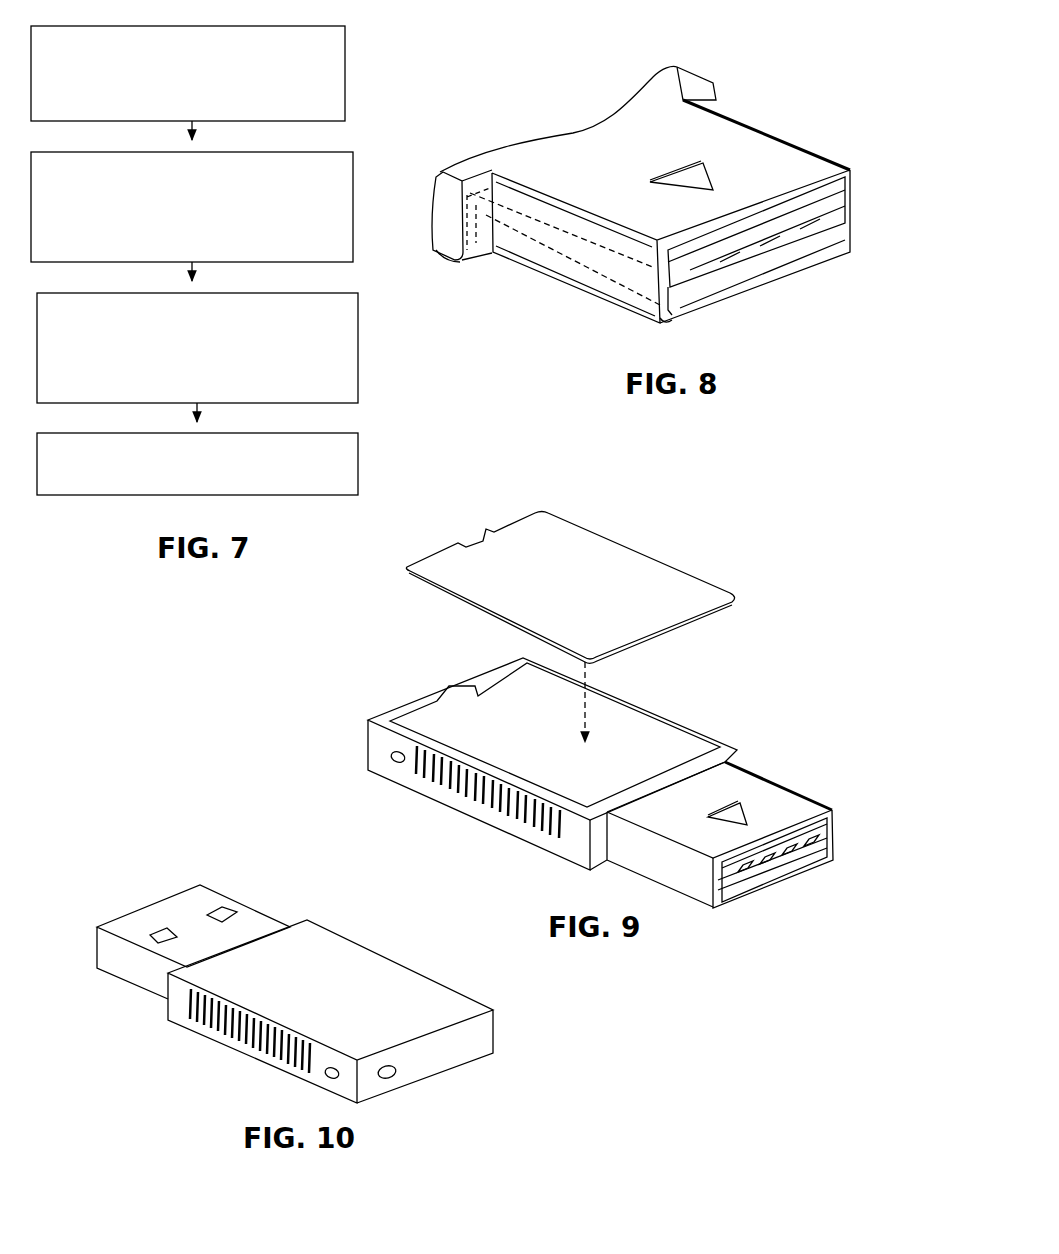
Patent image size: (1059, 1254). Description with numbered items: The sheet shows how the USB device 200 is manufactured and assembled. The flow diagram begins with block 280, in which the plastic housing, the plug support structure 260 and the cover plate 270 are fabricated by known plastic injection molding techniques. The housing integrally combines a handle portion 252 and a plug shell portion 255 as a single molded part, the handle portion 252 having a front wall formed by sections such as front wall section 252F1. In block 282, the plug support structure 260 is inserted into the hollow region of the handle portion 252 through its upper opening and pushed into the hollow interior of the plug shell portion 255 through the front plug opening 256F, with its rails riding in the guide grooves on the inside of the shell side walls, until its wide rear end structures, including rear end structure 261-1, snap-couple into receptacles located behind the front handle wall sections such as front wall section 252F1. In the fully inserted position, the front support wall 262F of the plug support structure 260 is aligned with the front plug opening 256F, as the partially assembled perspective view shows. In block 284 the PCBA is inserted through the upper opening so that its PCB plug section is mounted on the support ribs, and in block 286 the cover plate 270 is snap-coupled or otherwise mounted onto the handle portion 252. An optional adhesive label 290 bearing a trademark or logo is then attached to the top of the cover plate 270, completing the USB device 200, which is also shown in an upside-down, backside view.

In FIG. 7, the block 280 is at (302, 26).
In FIG. 7, the block 282 is at (303, 152).
In FIG. 7, the block 284 is at (315, 292).
In FIG. 7, the block 286 is at (323, 432).
In FIG. 8, the front wall section 252F1 is at (468, 192).
In FIG. 8, the plug shell portion 255 is at (740, 117).
In FIG. 9, the plug shell portion 255 is at (755, 773).
In FIG. 8, the rear end structure 261-1 is at (486, 228).
In FIG. 8, the front support wall 262F is at (803, 248).
In FIG. 8, the front plug opening 256F is at (773, 278).
In FIG. 8, the plug support structure 260 is at (717, 283).
In FIG. 9, the plug support structure 260 is at (735, 883).
In FIG. 9, the adhesive label 290 is at (518, 515).
In FIG. 9, the cover plate 270 is at (505, 690).
In FIG. 9, the USB device 200 is at (590, 791).
In FIG. 10, the USB device 200 is at (125, 870).
In FIG. 9, the handle portion 252 is at (687, 728).